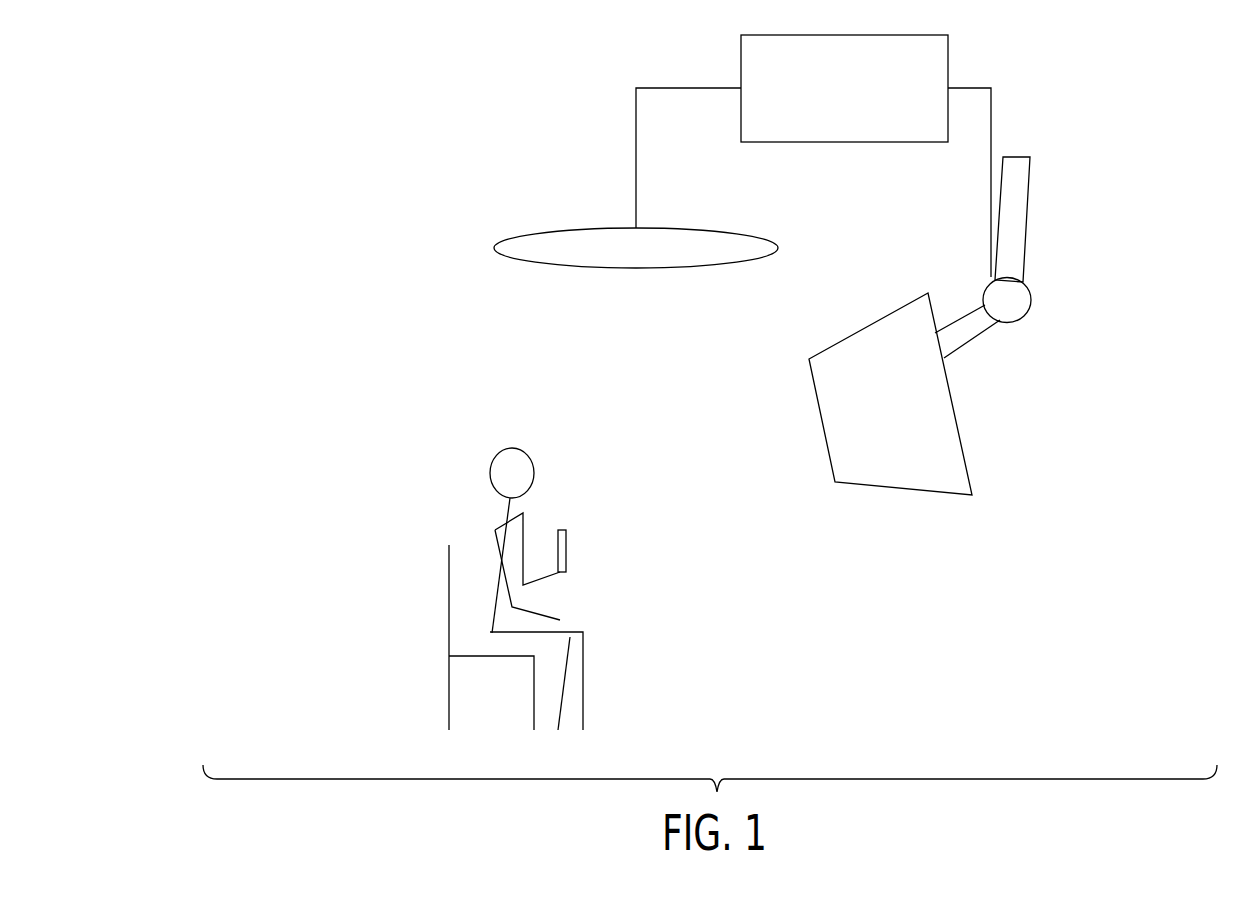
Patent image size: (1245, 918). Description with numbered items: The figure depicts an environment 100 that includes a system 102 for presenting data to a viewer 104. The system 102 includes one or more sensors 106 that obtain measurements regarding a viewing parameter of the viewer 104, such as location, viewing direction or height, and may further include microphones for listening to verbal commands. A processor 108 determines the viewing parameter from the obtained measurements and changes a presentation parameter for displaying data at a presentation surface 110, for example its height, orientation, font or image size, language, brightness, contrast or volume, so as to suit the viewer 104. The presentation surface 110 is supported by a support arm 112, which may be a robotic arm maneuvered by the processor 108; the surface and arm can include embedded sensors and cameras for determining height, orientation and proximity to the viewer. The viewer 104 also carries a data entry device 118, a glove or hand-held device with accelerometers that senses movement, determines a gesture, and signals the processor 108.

The environment 100 is at (268, 150).
The system 102 is at (1157, 88).
The viewer 104 is at (432, 437).
The sensors 106 is at (538, 232).
The processor 108 is at (745, 63).
The presentation surface 110 is at (868, 328).
The support arm 112 is at (1027, 246).
The data entry device 118 is at (567, 547).